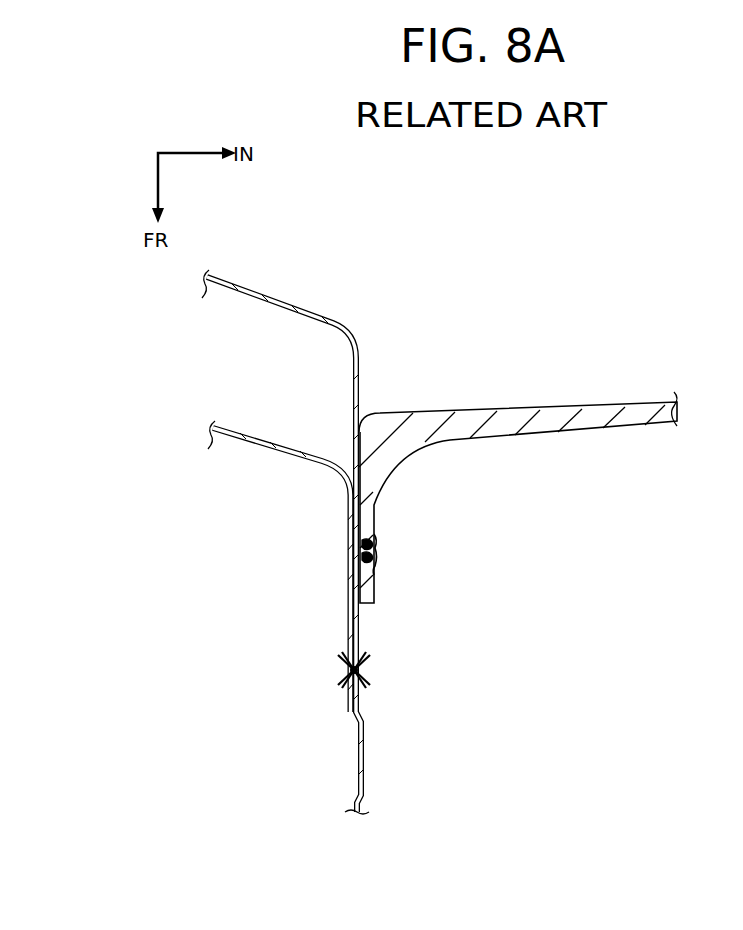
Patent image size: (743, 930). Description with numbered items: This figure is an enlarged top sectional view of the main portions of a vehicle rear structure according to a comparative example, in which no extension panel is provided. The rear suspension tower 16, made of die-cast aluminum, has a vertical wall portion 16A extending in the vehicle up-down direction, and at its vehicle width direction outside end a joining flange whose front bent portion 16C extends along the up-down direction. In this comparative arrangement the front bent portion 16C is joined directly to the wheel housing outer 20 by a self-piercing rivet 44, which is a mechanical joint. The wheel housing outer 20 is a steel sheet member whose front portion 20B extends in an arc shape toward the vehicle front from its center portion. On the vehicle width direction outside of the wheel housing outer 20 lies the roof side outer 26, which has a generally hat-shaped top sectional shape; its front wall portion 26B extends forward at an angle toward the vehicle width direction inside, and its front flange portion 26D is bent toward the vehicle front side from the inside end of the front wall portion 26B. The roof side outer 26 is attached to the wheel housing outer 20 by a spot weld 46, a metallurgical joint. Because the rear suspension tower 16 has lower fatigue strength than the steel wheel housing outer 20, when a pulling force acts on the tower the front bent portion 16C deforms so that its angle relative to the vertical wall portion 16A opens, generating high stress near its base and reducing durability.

The rear suspension tower 16 is at (522, 497).
The vertical wall portion 16A is at (588, 424).
The front bent portion 16C is at (367, 512).
The wheel housing outer 20 is at (285, 542).
The front portion 20B is at (353, 392).
The roof side outer 26 is at (271, 566).
The front wall portion 26B is at (258, 448).
The front flange portion 26D is at (348, 617).
The self-piercing rivet 44 is at (376, 548).
The spot weld 46 is at (365, 669).